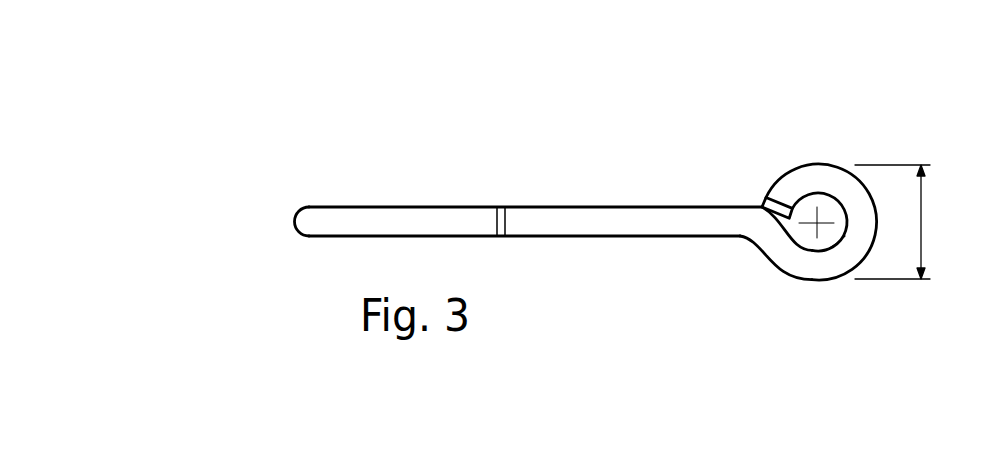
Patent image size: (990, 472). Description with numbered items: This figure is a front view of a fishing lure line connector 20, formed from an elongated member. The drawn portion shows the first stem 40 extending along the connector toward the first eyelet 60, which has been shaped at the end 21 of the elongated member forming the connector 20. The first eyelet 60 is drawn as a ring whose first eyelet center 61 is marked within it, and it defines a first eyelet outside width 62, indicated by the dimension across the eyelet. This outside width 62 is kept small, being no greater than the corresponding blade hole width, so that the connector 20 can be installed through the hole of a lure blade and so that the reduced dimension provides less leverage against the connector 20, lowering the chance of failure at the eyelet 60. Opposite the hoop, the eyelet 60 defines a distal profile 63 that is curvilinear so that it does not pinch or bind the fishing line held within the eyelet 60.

The connector 20 is at (341, 73).
The end of the elongated member 21 is at (766, 211).
The first stem 40 is at (636, 236).
The first eyelet 60 is at (815, 170).
The first eyelet center 61 is at (805, 215).
The first eyelet outside width 62 is at (922, 248).
The distal profile 63 is at (821, 251).